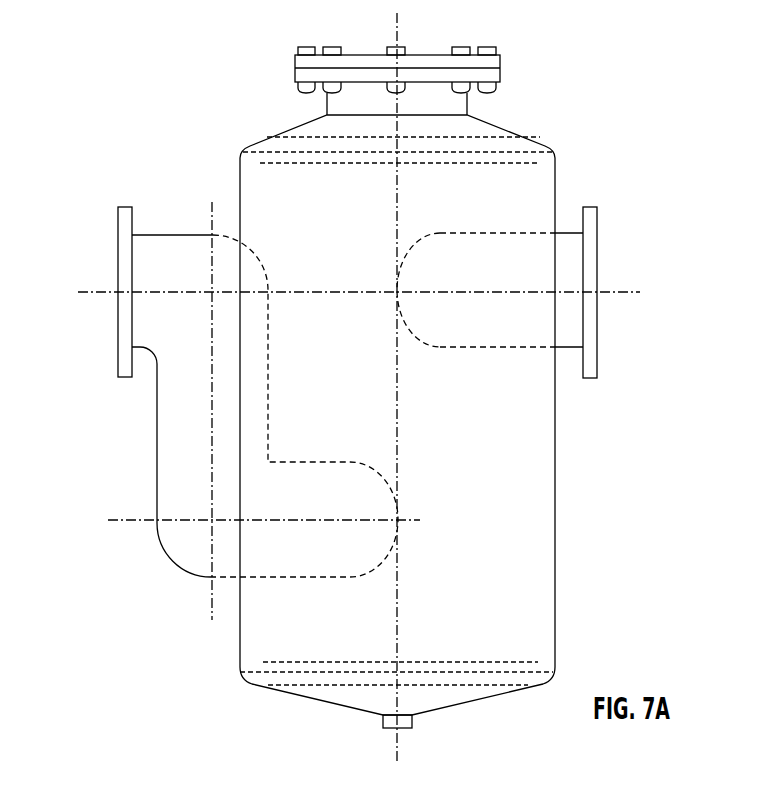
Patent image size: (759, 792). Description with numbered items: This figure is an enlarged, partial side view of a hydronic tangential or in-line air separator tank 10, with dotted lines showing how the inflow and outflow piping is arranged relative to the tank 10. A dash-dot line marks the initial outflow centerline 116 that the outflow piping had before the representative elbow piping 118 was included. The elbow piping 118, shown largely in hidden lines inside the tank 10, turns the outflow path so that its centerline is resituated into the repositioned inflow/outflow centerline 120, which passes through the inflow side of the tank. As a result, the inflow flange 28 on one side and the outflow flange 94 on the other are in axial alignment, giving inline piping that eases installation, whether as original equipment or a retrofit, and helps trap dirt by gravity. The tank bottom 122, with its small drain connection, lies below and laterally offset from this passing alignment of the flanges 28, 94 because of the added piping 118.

The air separator tank 10 is at (583, 535).
The inflow flange 28 is at (590, 207).
The outflow flange 94 is at (128, 207).
The representative elbow piping 118 is at (157, 437).
The repositioned inflow/outflow centerline 120 is at (93, 297).
The initial outflow centerline 116 is at (128, 522).
The tank bottom 122 is at (412, 720).